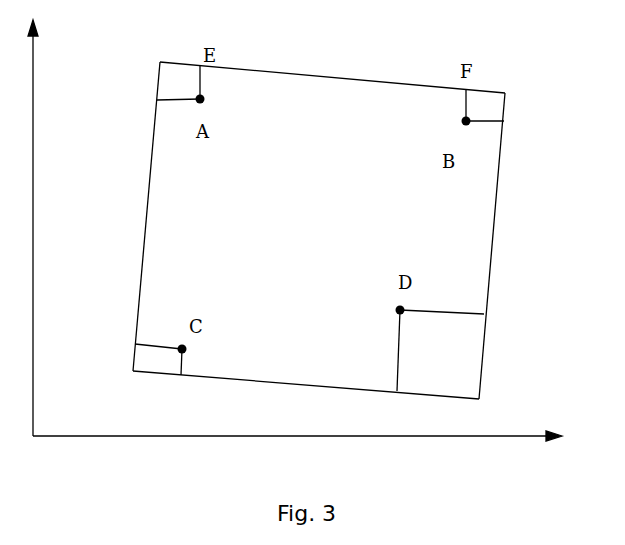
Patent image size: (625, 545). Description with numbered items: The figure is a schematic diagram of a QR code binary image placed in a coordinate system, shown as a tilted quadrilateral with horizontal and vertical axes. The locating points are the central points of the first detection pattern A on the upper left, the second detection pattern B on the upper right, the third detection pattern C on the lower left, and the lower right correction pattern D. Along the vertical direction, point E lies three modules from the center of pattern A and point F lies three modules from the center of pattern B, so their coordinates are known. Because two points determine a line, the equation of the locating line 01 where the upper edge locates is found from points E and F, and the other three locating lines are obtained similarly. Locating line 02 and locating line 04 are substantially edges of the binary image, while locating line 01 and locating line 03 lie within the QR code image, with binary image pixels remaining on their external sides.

The locating line 01 is at (336, 57).
The locating line 02 is at (531, 246).
The locating line 03 is at (306, 396).
The locating line 04 is at (111, 216).